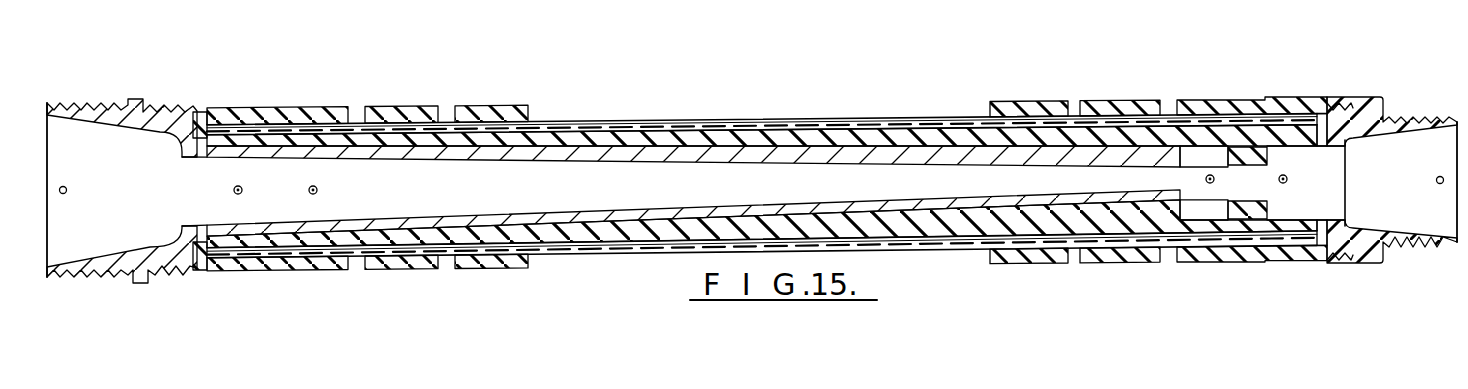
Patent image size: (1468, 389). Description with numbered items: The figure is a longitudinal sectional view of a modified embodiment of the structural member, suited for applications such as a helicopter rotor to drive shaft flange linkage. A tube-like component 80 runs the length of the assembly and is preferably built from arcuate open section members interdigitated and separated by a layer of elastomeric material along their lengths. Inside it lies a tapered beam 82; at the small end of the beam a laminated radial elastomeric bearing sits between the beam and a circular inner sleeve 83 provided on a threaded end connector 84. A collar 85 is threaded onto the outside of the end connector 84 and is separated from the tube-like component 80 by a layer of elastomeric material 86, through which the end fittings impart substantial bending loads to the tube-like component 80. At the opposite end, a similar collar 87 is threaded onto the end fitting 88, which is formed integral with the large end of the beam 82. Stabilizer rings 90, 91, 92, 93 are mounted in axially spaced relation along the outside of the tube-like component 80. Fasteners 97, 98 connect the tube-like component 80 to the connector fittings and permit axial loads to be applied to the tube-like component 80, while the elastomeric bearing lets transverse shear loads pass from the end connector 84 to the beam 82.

The tube-like component 80 is at (612, 123).
The tapered beam 82 is at (905, 160).
The circular inner sleeve 83 is at (1265, 228).
The threaded end connector 84 is at (1353, 118).
The collar 85 is at (1192, 99).
The layer of elastomeric material 86 is at (1229, 100).
The collar 87 is at (199, 113).
The end fitting 88 is at (117, 109).
The stabilizer ring 90 is at (400, 107).
The stabilizer ring 91 is at (493, 106).
The stabilizer ring 92 is at (1019, 103).
The stabilizer ring 93 is at (1089, 109).
The fastener 97 is at (239, 185).
The fastener 98 is at (313, 185).